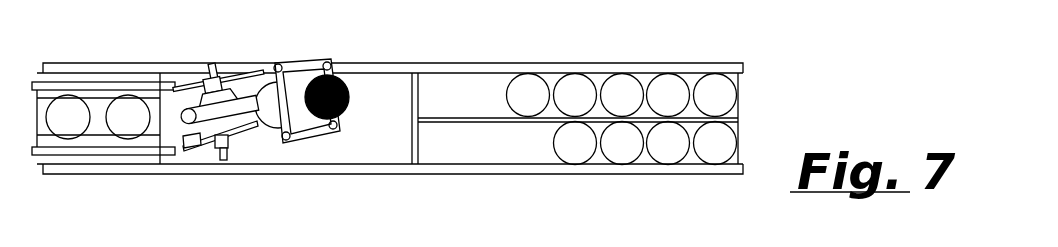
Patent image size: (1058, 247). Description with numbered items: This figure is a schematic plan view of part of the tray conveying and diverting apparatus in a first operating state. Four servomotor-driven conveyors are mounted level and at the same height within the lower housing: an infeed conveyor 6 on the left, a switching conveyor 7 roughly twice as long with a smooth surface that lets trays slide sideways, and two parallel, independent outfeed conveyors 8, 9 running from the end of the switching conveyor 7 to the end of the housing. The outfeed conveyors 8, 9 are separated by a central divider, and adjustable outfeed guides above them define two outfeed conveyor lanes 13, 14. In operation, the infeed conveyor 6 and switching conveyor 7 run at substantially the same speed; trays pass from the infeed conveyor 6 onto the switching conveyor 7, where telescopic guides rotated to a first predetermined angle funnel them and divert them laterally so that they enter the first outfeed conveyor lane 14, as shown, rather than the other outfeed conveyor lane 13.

The infeed conveyor 6 is at (40, 118).
The switching conveyor 7 is at (383, 82).
The outfeed conveyor 8 is at (740, 167).
The outfeed conveyor 9 is at (740, 76).
The outfeed conveyor lane 13 is at (762, 130).
The outfeed conveyor lane 14 is at (762, 98).